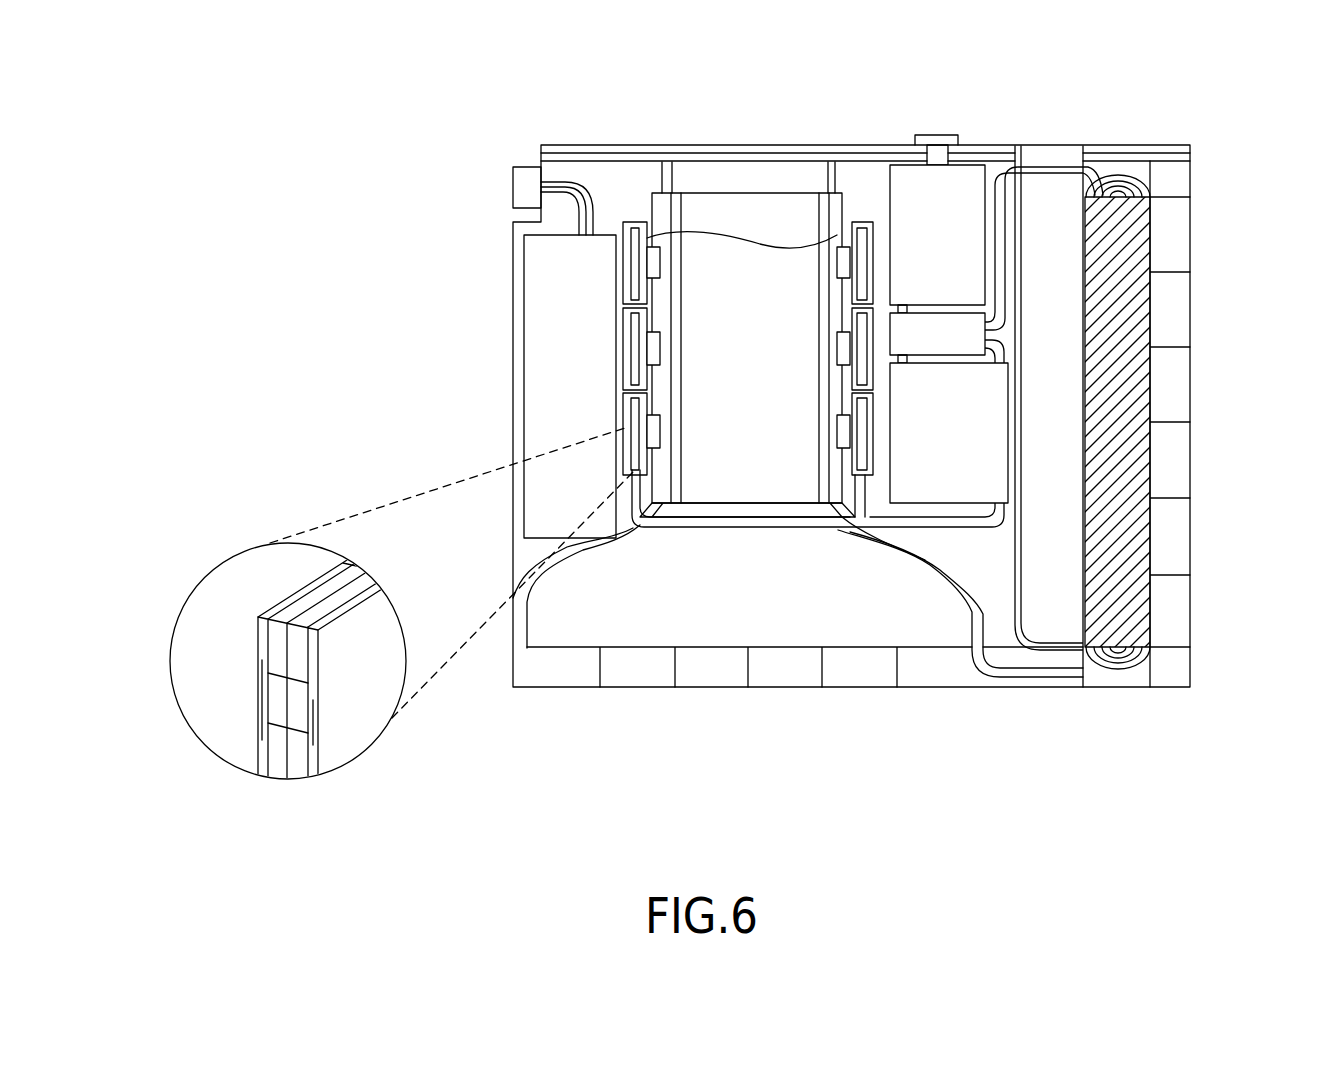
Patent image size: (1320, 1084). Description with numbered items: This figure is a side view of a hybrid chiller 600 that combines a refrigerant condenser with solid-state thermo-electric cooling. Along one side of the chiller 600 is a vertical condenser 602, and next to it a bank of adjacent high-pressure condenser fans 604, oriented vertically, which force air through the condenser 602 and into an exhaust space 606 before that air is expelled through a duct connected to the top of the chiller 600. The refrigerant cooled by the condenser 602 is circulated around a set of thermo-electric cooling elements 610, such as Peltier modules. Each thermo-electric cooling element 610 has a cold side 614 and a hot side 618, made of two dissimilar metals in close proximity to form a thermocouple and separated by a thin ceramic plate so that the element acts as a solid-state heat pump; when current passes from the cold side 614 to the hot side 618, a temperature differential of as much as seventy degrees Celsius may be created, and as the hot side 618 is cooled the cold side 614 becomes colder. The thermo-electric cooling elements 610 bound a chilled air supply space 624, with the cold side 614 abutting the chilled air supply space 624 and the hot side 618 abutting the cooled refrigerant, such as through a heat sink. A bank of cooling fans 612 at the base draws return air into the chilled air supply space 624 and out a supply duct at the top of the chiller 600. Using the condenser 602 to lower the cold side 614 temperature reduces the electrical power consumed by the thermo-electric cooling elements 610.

The hybrid chiller 600 is at (466, 95).
The vertical condenser 602 is at (1118, 205).
The high-pressure condenser fans 604 is at (1168, 311).
The exhaust space 606 is at (1047, 195).
The thermo-electric cooling elements 610 is at (861, 240).
The cooling fans 612 is at (858, 667).
The cold side 614 is at (342, 745).
The hot side 618 is at (263, 738).
The chilled air supply space 624 is at (745, 207).